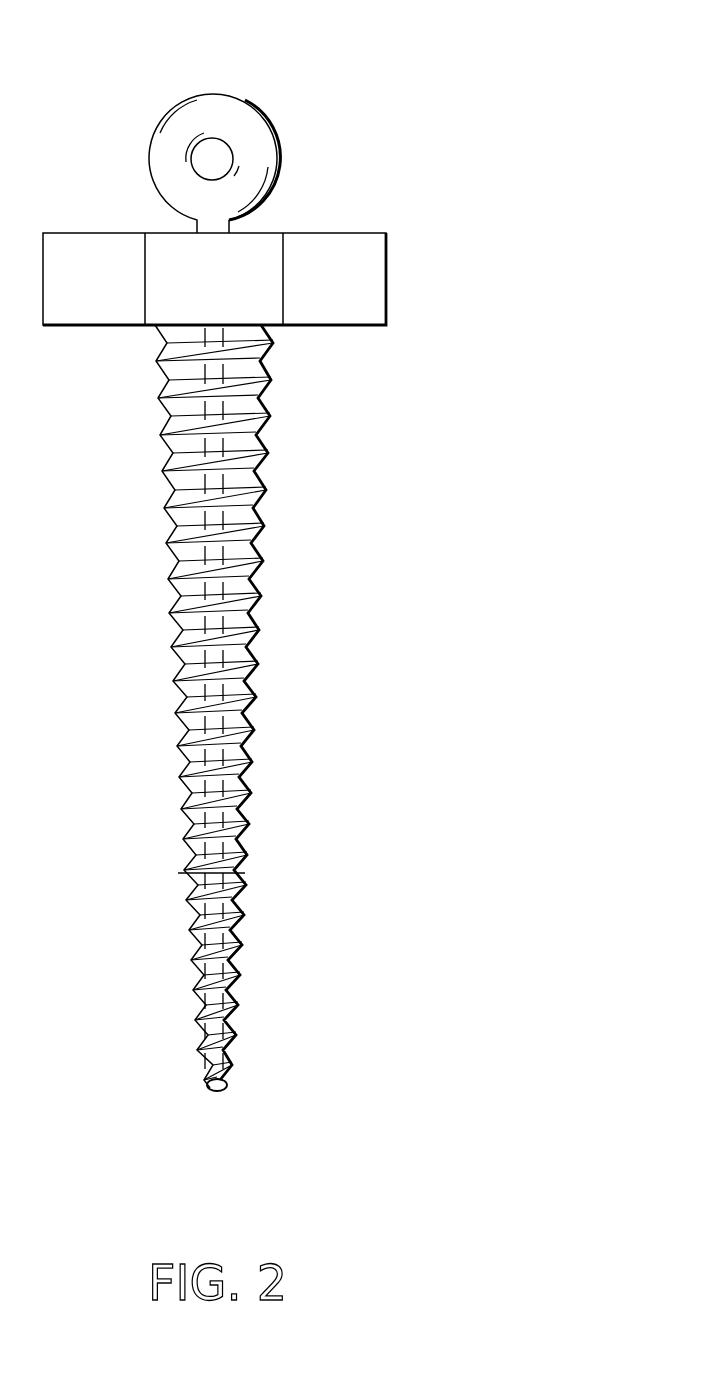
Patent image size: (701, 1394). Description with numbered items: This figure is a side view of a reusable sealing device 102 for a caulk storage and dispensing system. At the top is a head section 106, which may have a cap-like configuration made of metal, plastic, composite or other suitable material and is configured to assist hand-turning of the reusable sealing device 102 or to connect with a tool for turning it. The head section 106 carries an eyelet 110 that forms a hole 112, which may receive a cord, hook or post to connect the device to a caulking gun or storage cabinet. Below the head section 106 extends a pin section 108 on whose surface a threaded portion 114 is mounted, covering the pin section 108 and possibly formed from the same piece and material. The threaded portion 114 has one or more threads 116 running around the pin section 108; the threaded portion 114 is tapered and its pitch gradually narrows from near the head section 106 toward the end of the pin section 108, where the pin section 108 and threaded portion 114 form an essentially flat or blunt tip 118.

The reusable sealing device 102 is at (613, 82).
The head section 106 is at (387, 270).
The pin section 108 is at (242, 406).
The eyelet 110 is at (255, 158).
The hole 112 is at (210, 162).
The threaded portion 114 is at (178, 455).
The threads 116 is at (243, 453).
The tip 118 is at (226, 1093).